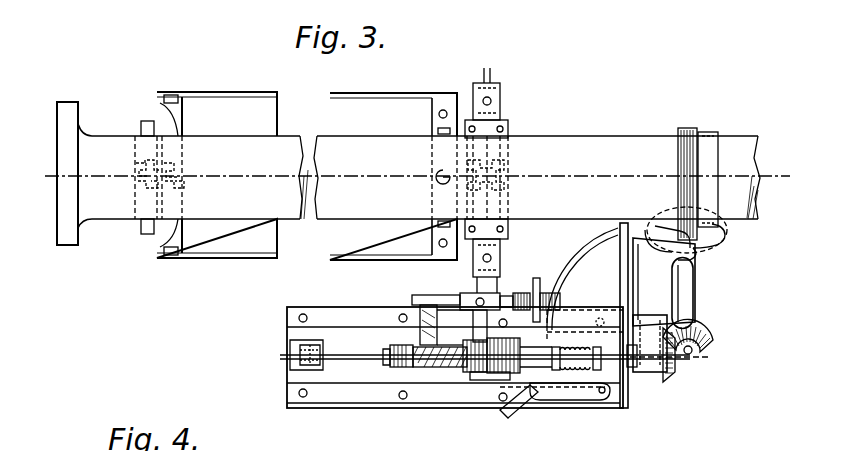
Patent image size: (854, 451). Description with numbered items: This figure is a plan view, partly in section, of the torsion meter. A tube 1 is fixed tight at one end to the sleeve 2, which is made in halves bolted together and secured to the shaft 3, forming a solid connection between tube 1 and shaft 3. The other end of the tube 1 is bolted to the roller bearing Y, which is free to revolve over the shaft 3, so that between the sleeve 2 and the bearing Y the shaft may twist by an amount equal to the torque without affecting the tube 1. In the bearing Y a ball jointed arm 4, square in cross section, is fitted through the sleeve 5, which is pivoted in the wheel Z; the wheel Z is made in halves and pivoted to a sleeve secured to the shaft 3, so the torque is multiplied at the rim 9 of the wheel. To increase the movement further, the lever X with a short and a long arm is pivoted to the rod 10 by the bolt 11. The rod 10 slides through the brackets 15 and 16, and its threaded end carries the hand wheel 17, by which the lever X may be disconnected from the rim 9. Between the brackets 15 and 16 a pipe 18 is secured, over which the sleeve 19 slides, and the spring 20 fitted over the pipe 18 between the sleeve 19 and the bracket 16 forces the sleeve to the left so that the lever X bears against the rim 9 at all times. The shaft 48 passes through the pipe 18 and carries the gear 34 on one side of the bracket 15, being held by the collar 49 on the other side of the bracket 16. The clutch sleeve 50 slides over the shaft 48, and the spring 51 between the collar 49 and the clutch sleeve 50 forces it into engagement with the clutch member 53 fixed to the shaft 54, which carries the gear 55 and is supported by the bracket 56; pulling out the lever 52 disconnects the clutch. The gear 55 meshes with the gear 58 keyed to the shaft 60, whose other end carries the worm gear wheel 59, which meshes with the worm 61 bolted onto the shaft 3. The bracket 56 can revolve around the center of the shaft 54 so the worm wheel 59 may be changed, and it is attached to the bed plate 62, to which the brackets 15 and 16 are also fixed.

The tube 1 is at (236, 92).
The sleeve 2 is at (157, 112).
The shaft 3 is at (65, 102).
The ball jointed arm 4 is at (414, 180).
The sleeve 5 is at (512, 170).
The rim 9 is at (490, 72).
The rod 10 is at (420, 296).
The bolt 11 is at (470, 293).
The bracket 15 is at (430, 333).
The bracket 16 is at (522, 293).
The hand wheel 17 is at (541, 282).
The pipe 18 is at (490, 376).
The sleeve 19 is at (470, 372).
The spring 20 is at (505, 373).
The gear 34 is at (405, 370).
The shaft 48 is at (450, 368).
The collar 49 is at (560, 330).
The clutch sleeve 50 is at (576, 349).
The spring 51 is at (540, 410).
The lever 52 is at (594, 400).
The clutch member 53 is at (645, 372).
The shaft 54 is at (660, 372).
The gear 55 is at (676, 375).
The bracket 56 is at (657, 315).
The gear 58 is at (712, 343).
The worm gear wheel 59 is at (726, 243).
The shaft 60 is at (695, 293).
The worm 61 is at (697, 130).
The bed plate 62 is at (350, 398).
The lever x is at (473, 318).
The roller bearing y is at (432, 110).
The wheel Z is at (500, 100).